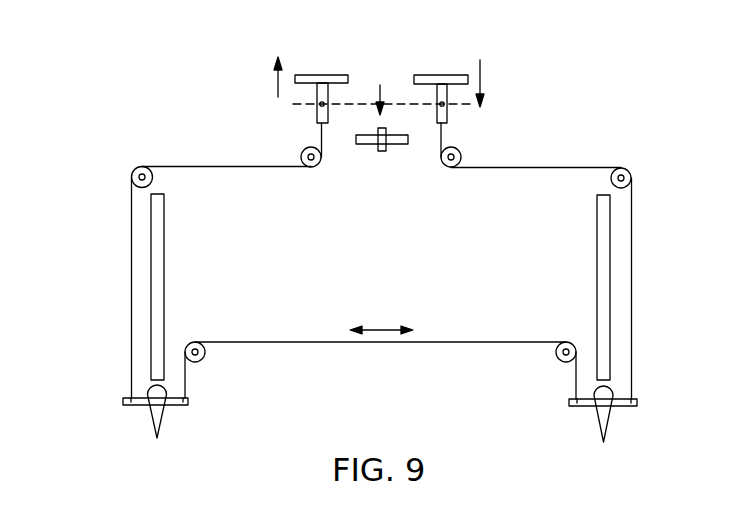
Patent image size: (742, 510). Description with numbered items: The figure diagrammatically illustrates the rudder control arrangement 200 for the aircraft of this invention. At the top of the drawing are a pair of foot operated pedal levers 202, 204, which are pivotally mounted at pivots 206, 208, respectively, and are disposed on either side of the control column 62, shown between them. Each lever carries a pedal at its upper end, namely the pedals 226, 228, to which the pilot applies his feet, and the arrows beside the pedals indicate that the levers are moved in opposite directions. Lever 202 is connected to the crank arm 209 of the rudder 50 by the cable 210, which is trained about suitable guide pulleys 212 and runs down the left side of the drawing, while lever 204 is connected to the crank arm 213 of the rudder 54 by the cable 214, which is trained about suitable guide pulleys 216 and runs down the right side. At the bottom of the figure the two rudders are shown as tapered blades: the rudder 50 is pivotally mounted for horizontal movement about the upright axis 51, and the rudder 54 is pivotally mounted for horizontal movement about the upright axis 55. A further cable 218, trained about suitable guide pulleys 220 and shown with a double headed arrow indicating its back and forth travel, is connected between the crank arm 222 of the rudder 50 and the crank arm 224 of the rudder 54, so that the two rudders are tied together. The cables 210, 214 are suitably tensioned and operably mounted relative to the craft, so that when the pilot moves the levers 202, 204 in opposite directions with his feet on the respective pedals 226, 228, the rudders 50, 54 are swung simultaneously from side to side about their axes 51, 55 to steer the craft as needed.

The rudder control arrangement 200 is at (238, 107).
The pedal lever 202 is at (313, 92).
The pedal lever 204 is at (437, 88).
The pivot mounting 206 is at (317, 106).
The pivot mounting 208 is at (447, 106).
The control column 62 is at (383, 84).
The pedal 226 is at (317, 75).
The pedal 228 is at (462, 75).
The cable 210 is at (247, 167).
The guide pulleys 212 is at (137, 170).
The cable 214 is at (633, 292).
The guide pulleys 216 is at (448, 167).
The cable 218 is at (488, 342).
The guide pulleys 220 is at (203, 353).
The crank arm 222 is at (175, 405).
The crank arm 224 is at (580, 407).
The crank arm 209 is at (137, 405).
The crank arm 213 is at (623, 407).
The upright axis 51 is at (157, 392).
The upright axis 55 is at (602, 393).
The rudder 50 is at (158, 413).
The rudder 54 is at (612, 418).